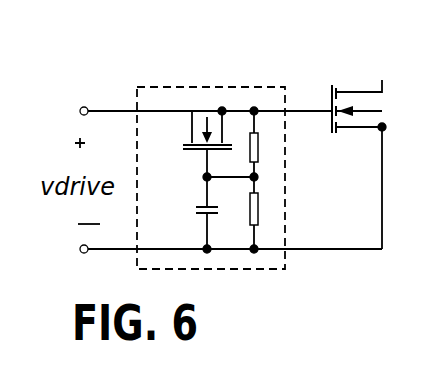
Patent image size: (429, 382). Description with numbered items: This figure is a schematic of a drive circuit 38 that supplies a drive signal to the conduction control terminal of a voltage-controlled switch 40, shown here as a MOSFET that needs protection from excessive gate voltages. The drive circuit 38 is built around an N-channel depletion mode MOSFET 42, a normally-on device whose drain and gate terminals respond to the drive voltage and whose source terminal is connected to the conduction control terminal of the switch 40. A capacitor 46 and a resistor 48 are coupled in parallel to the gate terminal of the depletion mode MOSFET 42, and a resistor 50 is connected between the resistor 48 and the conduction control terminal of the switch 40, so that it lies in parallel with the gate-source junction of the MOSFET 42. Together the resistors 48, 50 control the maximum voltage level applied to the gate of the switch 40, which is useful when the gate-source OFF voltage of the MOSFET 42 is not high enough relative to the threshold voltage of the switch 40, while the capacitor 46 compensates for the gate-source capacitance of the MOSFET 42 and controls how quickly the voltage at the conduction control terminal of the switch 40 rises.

The drive circuit 38 is at (213, 269).
The voltage-controlled switch 40 is at (332, 90).
The N-channel depletion mode MOSFET 42 is at (195, 84).
The capacitor 46 is at (197, 208).
The resistor 48 is at (259, 208).
The resistor 50 is at (259, 152).